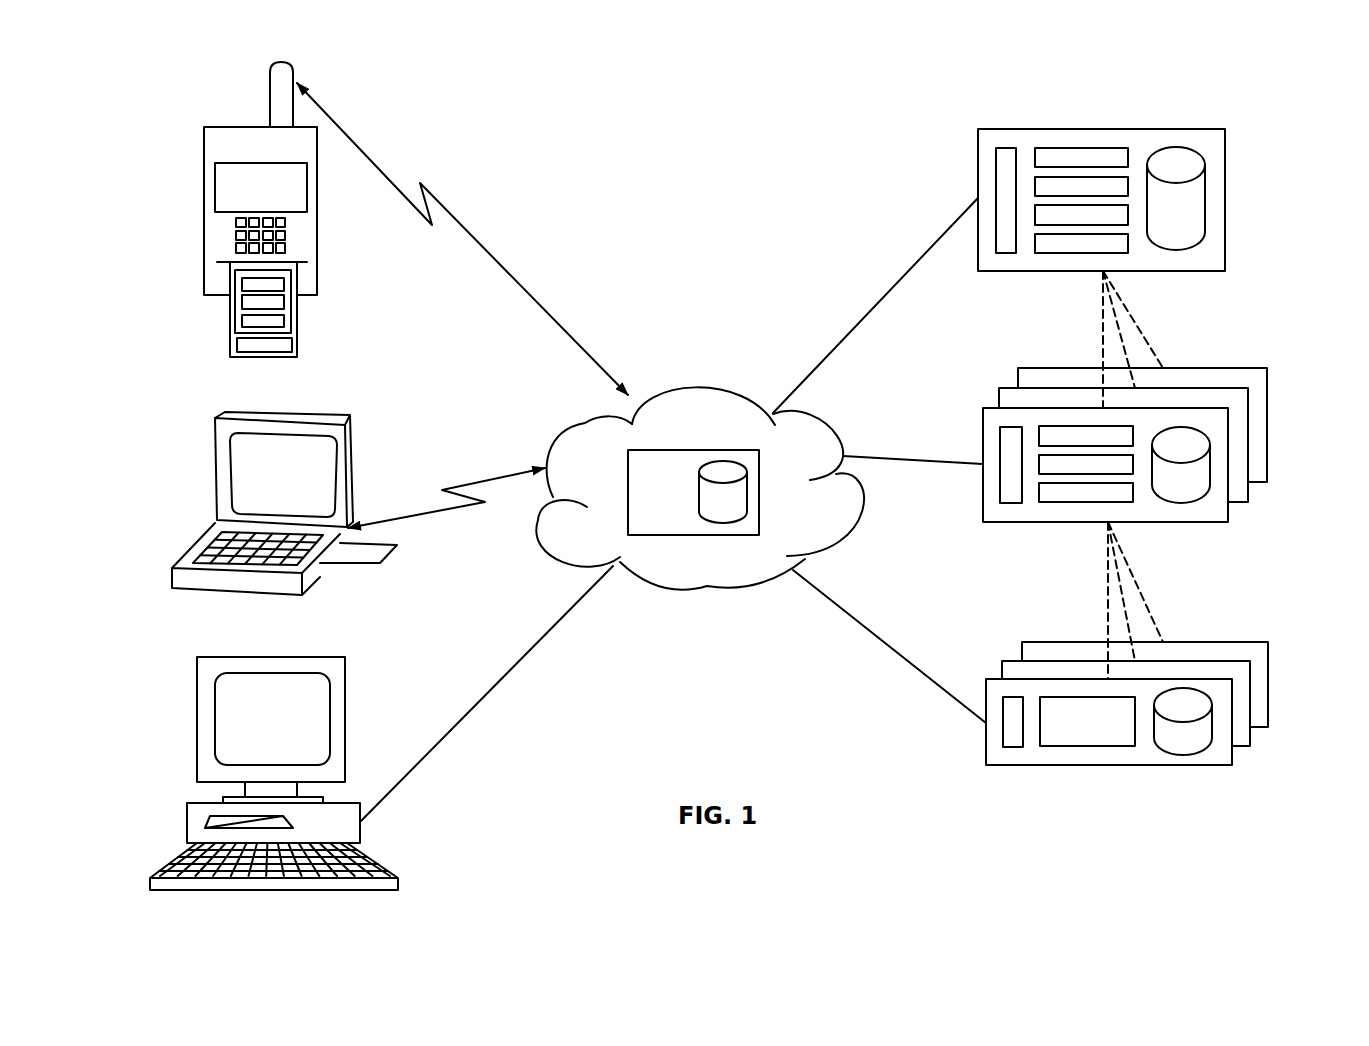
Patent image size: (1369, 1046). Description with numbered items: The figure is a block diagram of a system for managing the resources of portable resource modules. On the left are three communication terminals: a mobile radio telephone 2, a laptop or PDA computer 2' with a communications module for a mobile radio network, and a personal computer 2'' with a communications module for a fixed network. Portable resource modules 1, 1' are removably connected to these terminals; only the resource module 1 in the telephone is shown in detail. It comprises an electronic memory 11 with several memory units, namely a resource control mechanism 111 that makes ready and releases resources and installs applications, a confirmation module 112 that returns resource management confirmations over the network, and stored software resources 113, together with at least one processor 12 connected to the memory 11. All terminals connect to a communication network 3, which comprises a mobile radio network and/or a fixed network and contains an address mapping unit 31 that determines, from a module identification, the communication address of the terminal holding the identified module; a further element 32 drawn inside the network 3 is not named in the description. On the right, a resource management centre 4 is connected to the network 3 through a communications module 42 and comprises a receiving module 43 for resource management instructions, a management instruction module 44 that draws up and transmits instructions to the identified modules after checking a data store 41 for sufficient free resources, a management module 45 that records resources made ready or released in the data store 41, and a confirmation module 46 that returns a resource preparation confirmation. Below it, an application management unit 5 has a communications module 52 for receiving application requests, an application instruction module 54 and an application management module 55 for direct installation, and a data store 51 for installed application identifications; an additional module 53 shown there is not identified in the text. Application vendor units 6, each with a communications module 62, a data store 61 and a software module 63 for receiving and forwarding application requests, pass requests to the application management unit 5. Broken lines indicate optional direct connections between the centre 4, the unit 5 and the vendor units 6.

The portable resource module 1 is at (281, 327).
The electronic memory 11 is at (281, 311).
The resource control mechanism 111 is at (281, 281).
The confirmation module 112 is at (277, 301).
The software resources 113 is at (280, 322).
The processor 12 is at (272, 348).
The communication terminal 2 is at (230, 178).
The portable resource module 1' is at (289, 692).
The communication terminal 2' is at (291, 522).
The communication terminal 2'' is at (313, 773).
The communication network 3 is at (685, 550).
The address mapping unit 31 is at (653, 474).
The network database 32 is at (733, 497).
The resource management centre 4 is at (1103, 206).
The data store 41 is at (1187, 203).
The communications module 42 is at (1002, 167).
The receiving module 43 is at (1110, 155).
The management instruction module 44 is at (1073, 187).
The management module 45 is at (1100, 213).
The confirmation module 46 is at (1058, 242).
The application management unit 5 is at (1112, 452).
The data store 51 is at (1185, 447).
The communications module 52 is at (1008, 478).
The first module of server 5 53 is at (1080, 433).
The application instruction module 54 is at (1108, 462).
The application management module 55 is at (1060, 493).
The application vendor unit 6 is at (1130, 736).
The data store 61 is at (1192, 730).
The communications module 62 is at (1013, 730).
The software module 63 is at (1087, 730).